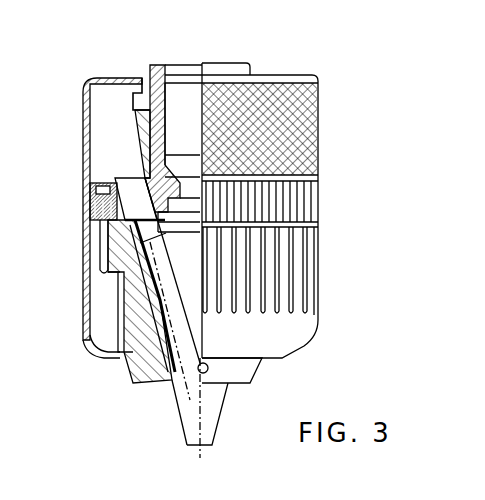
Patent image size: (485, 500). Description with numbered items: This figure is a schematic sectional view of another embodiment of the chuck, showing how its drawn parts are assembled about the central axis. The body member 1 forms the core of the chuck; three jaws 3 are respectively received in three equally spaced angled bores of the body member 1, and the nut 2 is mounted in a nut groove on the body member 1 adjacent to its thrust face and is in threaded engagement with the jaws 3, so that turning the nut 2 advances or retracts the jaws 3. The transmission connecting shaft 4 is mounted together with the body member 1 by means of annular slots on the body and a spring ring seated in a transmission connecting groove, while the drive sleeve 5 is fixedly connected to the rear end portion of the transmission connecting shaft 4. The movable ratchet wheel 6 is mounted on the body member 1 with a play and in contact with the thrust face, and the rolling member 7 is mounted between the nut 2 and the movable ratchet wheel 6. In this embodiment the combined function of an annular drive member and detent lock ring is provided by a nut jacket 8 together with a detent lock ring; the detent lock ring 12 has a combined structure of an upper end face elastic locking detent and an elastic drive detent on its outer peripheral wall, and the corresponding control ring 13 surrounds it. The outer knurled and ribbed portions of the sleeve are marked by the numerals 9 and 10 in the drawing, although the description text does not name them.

The body member 1 is at (140, 133).
The nut 2 is at (110, 270).
The jaws 3 is at (160, 383).
The transmission connecting shaft 4 is at (148, 72).
The drive sleeve 5 is at (83, 98).
The movable ratchet wheel 6 is at (110, 218).
The rolling member 7 is at (102, 232).
The nut jacket 8 is at (82, 317).
The clamping sleeve 9 is at (283, 202).
The sleeve ribs 10 is at (283, 268).
The detent lock ring 12 is at (85, 198).
The control ring 13 is at (88, 207).